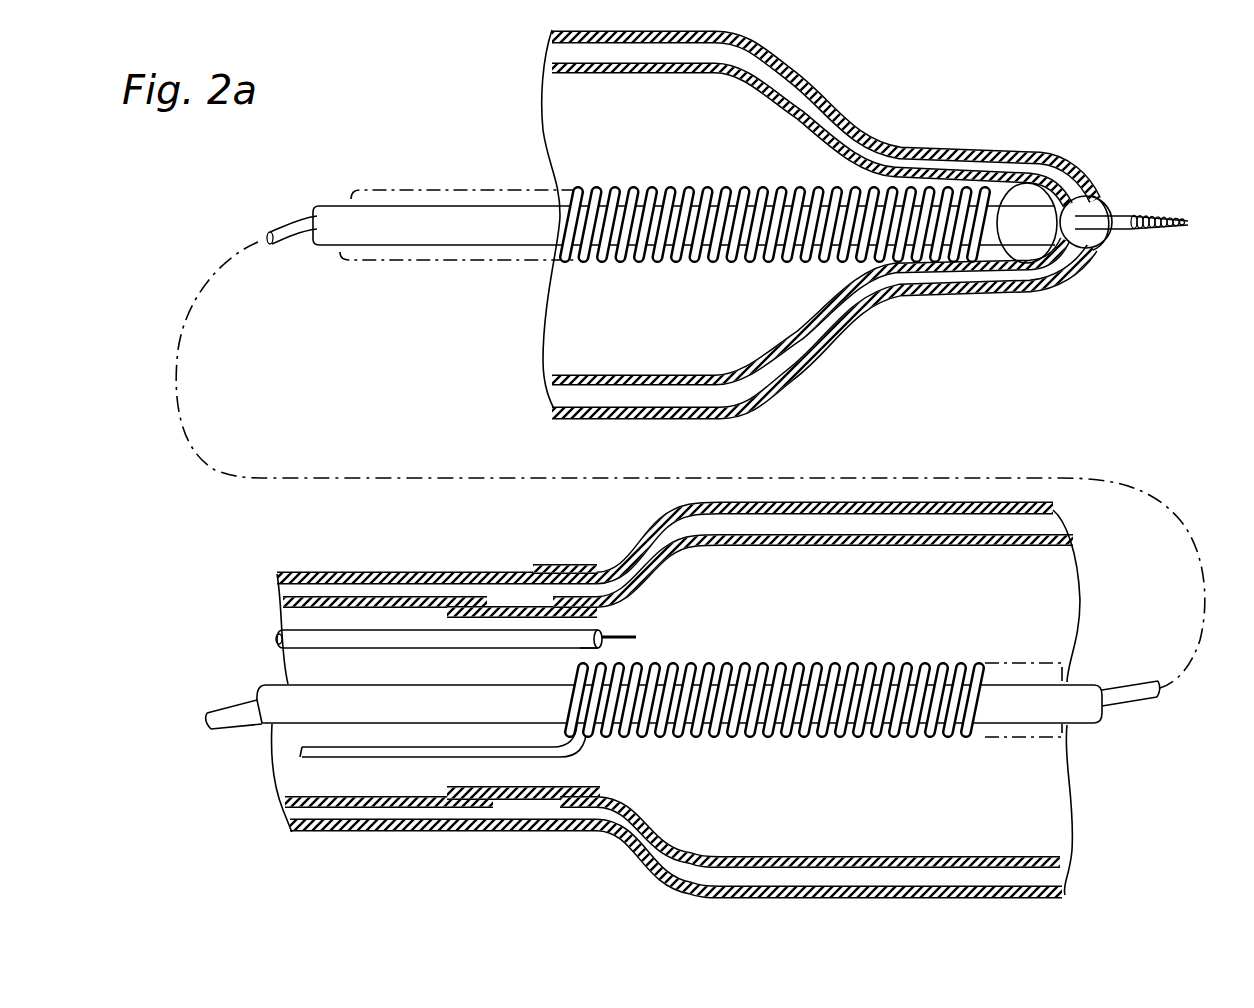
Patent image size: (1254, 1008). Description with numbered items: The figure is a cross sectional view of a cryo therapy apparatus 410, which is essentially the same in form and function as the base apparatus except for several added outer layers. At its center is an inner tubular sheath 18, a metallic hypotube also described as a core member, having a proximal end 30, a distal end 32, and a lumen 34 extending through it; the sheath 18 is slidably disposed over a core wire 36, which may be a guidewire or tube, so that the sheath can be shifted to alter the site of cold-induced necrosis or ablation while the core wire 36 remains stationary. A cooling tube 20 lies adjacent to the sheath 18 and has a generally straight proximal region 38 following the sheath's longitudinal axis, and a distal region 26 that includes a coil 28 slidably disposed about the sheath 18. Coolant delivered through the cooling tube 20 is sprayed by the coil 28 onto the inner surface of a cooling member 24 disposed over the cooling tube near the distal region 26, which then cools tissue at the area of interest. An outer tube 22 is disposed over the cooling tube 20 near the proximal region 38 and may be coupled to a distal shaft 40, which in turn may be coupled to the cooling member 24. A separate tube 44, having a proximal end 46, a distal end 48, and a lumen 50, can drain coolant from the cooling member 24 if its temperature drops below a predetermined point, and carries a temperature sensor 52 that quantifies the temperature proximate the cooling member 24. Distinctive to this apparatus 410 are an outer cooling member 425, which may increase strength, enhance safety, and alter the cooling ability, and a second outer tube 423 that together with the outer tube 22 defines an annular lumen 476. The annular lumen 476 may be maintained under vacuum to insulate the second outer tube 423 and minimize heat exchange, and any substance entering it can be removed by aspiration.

The cryo therapy apparatus 410 is at (480, 94).
The inner tubular sheath 18 is at (420, 222).
The distal region 26 is at (647, 183).
The coil 28 is at (722, 190).
The distal end 32 is at (1052, 206).
The lumen 34 is at (1089, 213).
The core wire 36 is at (1108, 232).
The tube 44 is at (352, 636).
The annular lumen 476 is at (398, 588).
The proximal end 46 is at (281, 630).
The proximal end 30 is at (263, 684).
The lumen 50 is at (604, 634).
The temperature sensor 52 is at (640, 637).
The distal end 48 is at (591, 641).
The outer tube 22 is at (337, 800).
The cooling tube 20 is at (366, 757).
The proximal region 38 is at (436, 766).
The distal shaft 40 is at (526, 797).
The second outer tube 423 is at (299, 830).
The cooling member 24 is at (762, 857).
The outer cooling member 425 is at (814, 896).